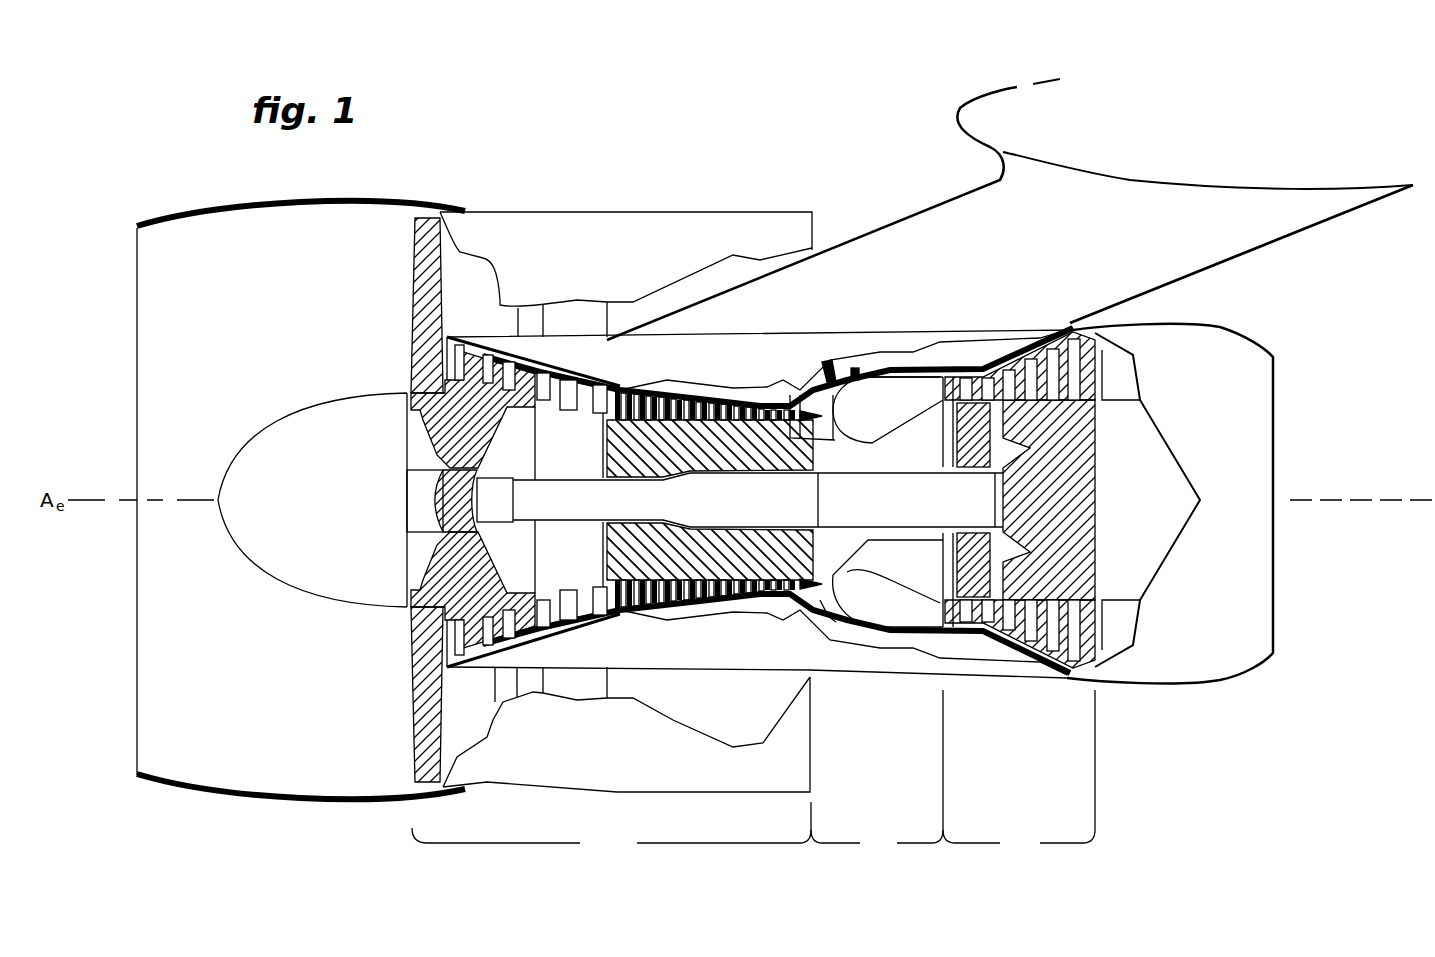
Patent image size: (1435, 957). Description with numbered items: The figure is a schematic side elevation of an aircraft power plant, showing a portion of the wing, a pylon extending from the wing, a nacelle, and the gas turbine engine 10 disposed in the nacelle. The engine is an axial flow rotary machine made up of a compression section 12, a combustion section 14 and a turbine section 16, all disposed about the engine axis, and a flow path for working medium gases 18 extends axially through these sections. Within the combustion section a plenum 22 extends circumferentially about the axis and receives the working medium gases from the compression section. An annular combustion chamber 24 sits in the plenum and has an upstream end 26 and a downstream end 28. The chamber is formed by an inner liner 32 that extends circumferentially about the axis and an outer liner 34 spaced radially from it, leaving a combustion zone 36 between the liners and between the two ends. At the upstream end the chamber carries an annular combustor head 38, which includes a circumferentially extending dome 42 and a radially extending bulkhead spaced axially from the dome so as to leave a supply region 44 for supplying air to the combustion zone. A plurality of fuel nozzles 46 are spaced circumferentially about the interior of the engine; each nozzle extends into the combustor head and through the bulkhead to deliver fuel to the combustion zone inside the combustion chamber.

The gas turbine engine 10 is at (712, 179).
The compression section 12 is at (611, 828).
The combustion section 14 is at (877, 775).
The turbine section 16 is at (1108, 592).
The flow path for working medium gases 18 is at (380, 355).
The plenum 22 is at (835, 470).
The annular combustion chamber 24 is at (858, 375).
The upstream end 26 is at (803, 482).
The downstream end 28 is at (950, 372).
The inner liner 32 is at (873, 443).
The outer liner 34 is at (887, 376).
The combustion zone 36 is at (906, 410).
The annular combustor head 38 is at (792, 613).
The dome 42 is at (810, 588).
The supply region 44 is at (847, 578).
The fuel nozzles 46 is at (830, 623).